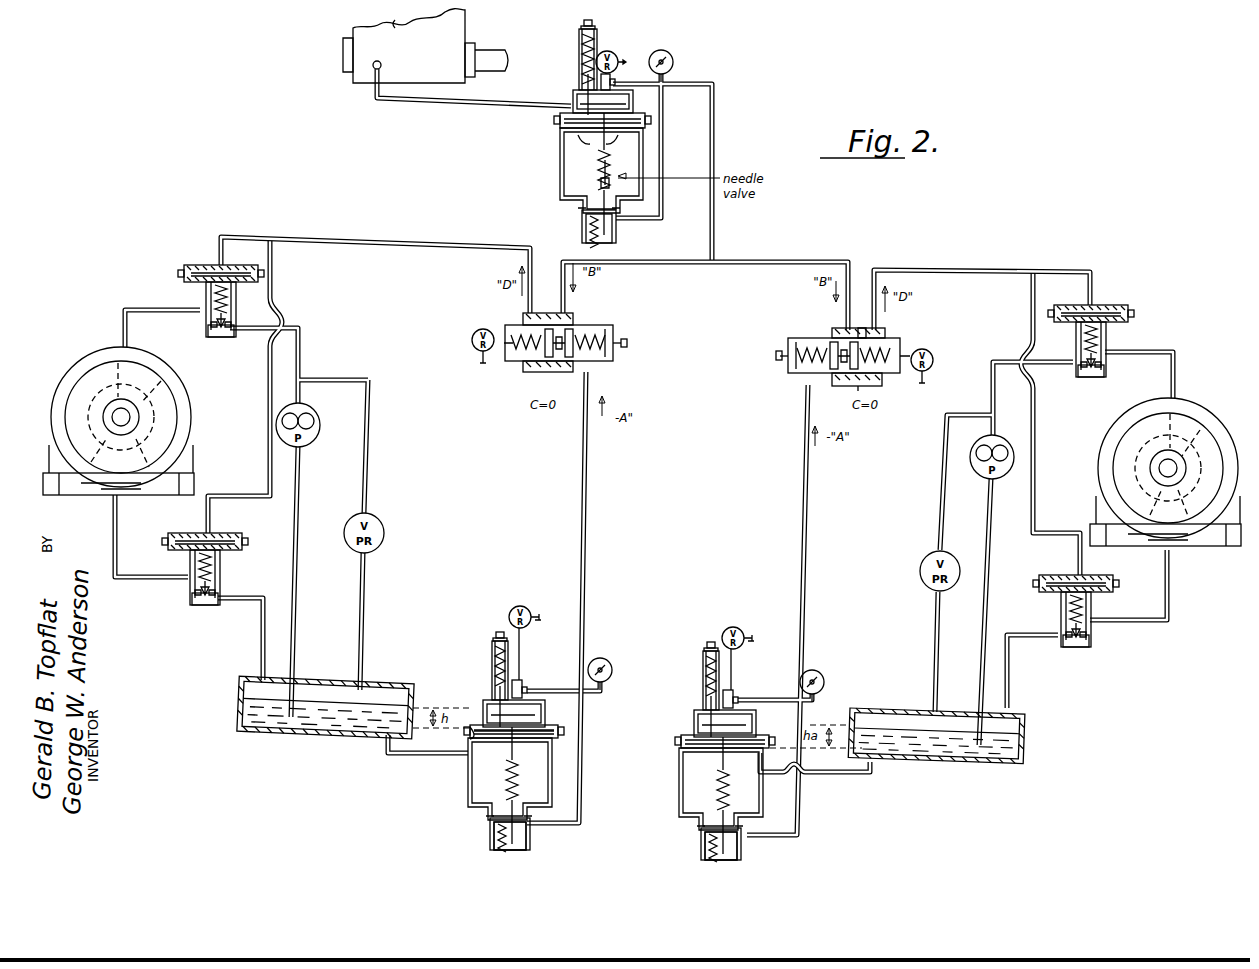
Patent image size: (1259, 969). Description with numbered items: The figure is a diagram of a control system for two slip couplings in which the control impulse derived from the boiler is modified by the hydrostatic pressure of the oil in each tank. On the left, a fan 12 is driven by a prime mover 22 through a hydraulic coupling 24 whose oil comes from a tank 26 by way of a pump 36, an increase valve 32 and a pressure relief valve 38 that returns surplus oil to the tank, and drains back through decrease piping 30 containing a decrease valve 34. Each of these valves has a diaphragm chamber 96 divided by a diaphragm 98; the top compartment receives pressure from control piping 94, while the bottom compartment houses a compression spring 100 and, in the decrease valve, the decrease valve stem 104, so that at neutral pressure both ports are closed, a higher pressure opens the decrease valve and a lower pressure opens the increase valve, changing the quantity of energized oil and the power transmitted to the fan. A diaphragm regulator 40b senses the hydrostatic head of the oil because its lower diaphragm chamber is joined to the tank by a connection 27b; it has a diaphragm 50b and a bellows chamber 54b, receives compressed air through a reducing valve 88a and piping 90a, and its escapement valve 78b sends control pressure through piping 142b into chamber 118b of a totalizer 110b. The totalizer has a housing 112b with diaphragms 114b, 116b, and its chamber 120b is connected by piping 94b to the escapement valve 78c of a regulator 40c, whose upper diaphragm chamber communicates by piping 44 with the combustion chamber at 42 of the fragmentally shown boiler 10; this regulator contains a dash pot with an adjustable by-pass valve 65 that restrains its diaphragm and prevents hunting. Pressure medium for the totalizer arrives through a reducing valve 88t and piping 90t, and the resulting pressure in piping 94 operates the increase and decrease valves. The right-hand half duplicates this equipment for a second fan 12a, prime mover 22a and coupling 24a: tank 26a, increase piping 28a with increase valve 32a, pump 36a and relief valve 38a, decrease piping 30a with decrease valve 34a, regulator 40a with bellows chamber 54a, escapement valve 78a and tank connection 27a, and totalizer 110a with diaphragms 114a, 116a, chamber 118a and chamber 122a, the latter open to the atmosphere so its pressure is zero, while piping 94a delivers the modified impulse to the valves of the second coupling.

The boiler 10 is at (462, 29).
The combustion chamber 42 is at (381, 66).
The piping 44 is at (370, 99).
The escapement valve 78c is at (616, 80).
The adjustable by-pass valve 65 is at (610, 172).
The regulator 40c is at (518, 182).
The control piping 94 is at (462, 246).
The piping 94b is at (690, 261).
The control piping 94a is at (975, 268).
The chamber 122a is at (865, 326).
The increase valve 32 is at (178, 257).
The hydraulic coupling 24 is at (160, 375).
The prime mover 22 is at (172, 388).
The fan 12 is at (192, 407).
The pump 36 is at (320, 431).
The pressure relief valve 38 is at (385, 533).
The diaphragm chamber 96 is at (180, 539).
The diaphragm 98 is at (236, 539).
The compression spring 100 is at (197, 561).
The decrease valve 34 is at (208, 573).
The decrease valve stem 104 is at (204, 606).
The decrease piping 30 is at (138, 578).
The tank 26 is at (239, 708).
The conduit 27b is at (393, 758).
The diaphragm regulator 40b is at (437, 780).
The diaphragm 50b is at (548, 733).
The bellows chamber 54b is at (530, 845).
The piping 142b is at (584, 585).
The reducing valve 88a is at (521, 606).
The piping 90a is at (541, 617).
The escapement valve 78b is at (523, 684).
The diaphragm 114b is at (520, 326).
The chamber 120b is at (571, 324).
The chamber 118b is at (605, 336).
The housing 112b is at (527, 365).
The totalizer 110b is at (568, 362).
The diaphragm 116b is at (565, 373).
The reducing valve 88t is at (472, 338).
The piping 90t is at (480, 358).
The totalizer 110a is at (837, 345).
The chamber 118a is at (806, 339).
The diaphragm 114a is at (833, 329).
The diaphragm 116a is at (878, 340).
The diaphragm regulator 40a is at (645, 802).
The bellows chamber 54a is at (745, 852).
The escapement valve 78a is at (740, 692).
The conduit 27a is at (870, 774).
The tank 26a is at (975, 763).
The pump 36a is at (985, 480).
The pressure relief valve 38a is at (920, 571).
The decrease piping 30a is at (1036, 639).
The decrease valve 34a is at (1111, 578).
The increase valve 32a is at (1128, 302).
The increase piping 28a is at (1148, 355).
The fan 12a is at (1100, 436).
The prime mover 22a is at (1114, 468).
The hydraulic coupling 24a is at (1190, 430).